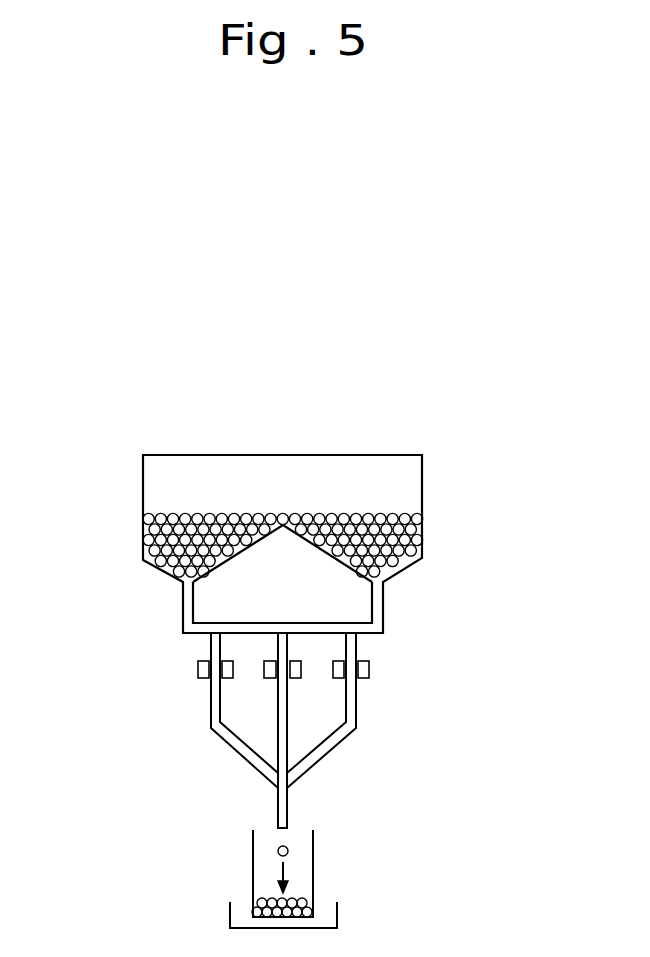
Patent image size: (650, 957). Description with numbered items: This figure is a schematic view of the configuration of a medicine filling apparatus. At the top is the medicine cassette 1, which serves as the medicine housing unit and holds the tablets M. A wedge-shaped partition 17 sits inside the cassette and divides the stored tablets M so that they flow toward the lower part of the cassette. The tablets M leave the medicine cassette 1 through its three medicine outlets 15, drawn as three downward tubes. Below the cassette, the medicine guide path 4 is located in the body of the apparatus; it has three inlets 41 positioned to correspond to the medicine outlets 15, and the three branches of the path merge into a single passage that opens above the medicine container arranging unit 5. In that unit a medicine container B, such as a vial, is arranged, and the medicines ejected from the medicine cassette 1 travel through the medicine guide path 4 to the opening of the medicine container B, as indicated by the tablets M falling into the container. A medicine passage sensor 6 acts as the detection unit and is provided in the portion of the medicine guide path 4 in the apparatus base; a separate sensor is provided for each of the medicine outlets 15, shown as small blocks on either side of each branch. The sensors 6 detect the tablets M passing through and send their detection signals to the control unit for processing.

The medicine cassette 1 is at (328, 464).
The partition / inverted-V guide 17 is at (422, 552).
The tablets M is at (390, 516).
The medicine outlets 15 is at (212, 633).
The inlets 41 is at (211, 637).
The medicine passage sensor 6 is at (198, 670).
The medicine guide path 4 is at (288, 812).
The medicine container B is at (313, 866).
The medicine container arranging unit 5 is at (252, 929).